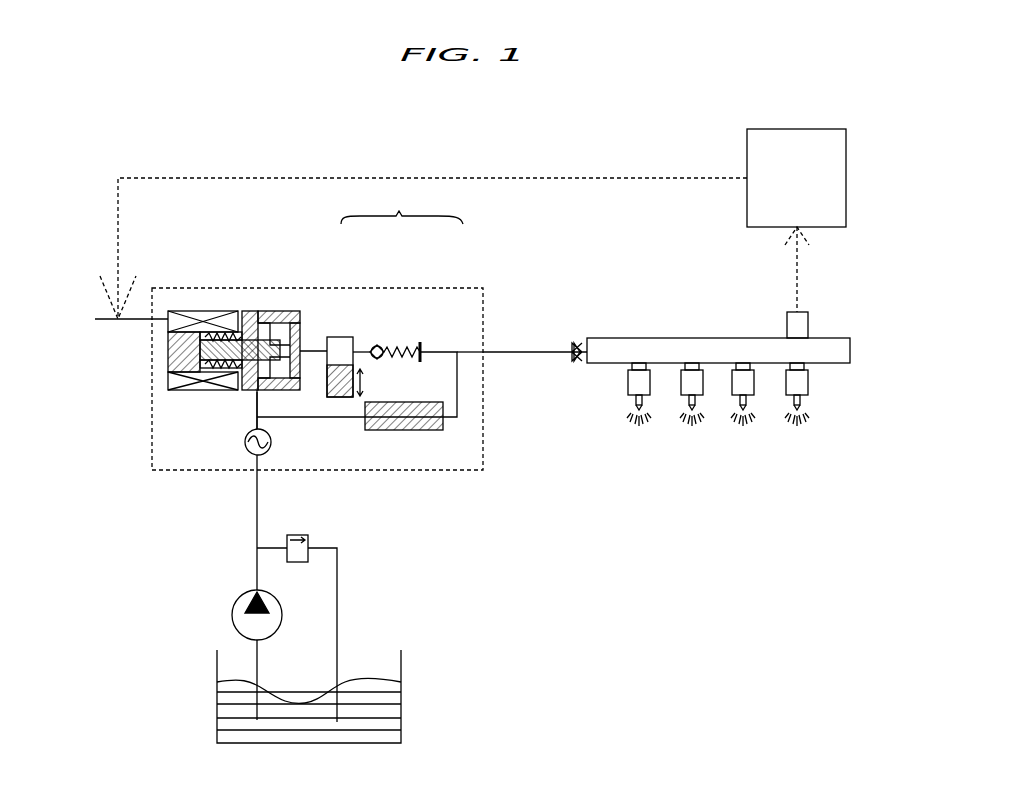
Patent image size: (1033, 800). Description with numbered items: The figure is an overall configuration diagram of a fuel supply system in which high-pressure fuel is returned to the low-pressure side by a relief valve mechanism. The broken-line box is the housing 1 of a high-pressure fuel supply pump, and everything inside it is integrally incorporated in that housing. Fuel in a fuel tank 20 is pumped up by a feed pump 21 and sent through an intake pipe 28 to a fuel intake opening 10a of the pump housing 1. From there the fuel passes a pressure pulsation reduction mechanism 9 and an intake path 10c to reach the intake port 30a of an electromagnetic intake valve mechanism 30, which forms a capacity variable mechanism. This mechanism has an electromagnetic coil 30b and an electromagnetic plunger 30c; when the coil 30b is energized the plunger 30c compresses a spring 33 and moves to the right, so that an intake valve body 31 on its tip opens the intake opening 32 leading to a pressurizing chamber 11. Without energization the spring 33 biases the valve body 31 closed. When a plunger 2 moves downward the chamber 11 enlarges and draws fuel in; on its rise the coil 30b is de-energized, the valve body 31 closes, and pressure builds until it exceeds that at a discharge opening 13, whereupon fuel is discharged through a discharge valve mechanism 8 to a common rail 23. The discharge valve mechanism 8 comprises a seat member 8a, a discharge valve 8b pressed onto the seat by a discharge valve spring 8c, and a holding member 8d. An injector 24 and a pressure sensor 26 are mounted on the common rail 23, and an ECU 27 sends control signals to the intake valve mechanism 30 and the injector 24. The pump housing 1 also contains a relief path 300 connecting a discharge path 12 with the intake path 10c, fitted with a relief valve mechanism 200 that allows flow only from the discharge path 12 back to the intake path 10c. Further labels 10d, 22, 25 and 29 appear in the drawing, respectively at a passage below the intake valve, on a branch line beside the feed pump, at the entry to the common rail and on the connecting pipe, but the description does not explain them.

The pump housing 1 is at (483, 464).
The plunger 2 is at (340, 385).
The discharge valve mechanism 8 is at (402, 278).
The seat member 8a is at (375, 348).
The discharge valve 8b is at (382, 350).
The discharge valve spring 8c is at (403, 350).
The holding member 8d is at (420, 350).
The pressure pulsation reduction mechanism 9 is at (245, 448).
The fuel intake opening 10a is at (257, 474).
The intake path 10c is at (257, 420).
The fuel passage 10d is at (257, 394).
The pressurizing chamber 11 is at (333, 352).
The discharge path 12 is at (447, 352).
The discharge opening 13 is at (484, 352).
The fuel tank 20 is at (400, 713).
The feed pump 21 is at (232, 612).
The pressure relief valve 22 is at (308, 537).
The common rail 23 is at (625, 348).
The injector 24 is at (797, 381).
The check valve 25 is at (577, 341).
The pressure sensor 26 is at (790, 325).
The ECU 27 is at (747, 152).
The intake pipe 28 is at (257, 522).
The fuel pipe 29 is at (530, 352).
The electromagnetic intake valve mechanism 30 is at (211, 342).
The intake port 30a is at (258, 392).
The electromagnetic coil 30b is at (190, 365).
The electromagnetic plunger 30c is at (190, 347).
The intake valve body 31 is at (295, 325).
The intake opening 32 is at (272, 336).
The spring 33 is at (235, 335).
The relief valve mechanism 200 is at (420, 440).
The relief path 300 is at (458, 405).